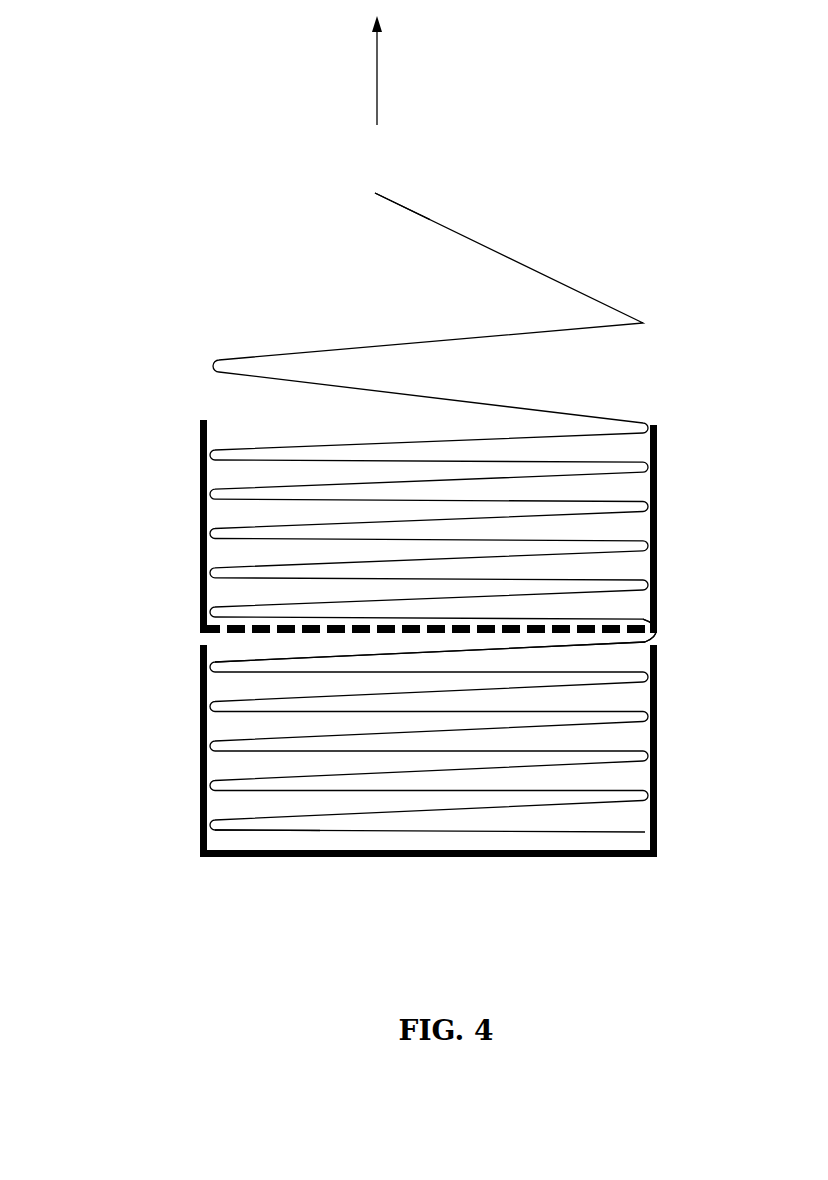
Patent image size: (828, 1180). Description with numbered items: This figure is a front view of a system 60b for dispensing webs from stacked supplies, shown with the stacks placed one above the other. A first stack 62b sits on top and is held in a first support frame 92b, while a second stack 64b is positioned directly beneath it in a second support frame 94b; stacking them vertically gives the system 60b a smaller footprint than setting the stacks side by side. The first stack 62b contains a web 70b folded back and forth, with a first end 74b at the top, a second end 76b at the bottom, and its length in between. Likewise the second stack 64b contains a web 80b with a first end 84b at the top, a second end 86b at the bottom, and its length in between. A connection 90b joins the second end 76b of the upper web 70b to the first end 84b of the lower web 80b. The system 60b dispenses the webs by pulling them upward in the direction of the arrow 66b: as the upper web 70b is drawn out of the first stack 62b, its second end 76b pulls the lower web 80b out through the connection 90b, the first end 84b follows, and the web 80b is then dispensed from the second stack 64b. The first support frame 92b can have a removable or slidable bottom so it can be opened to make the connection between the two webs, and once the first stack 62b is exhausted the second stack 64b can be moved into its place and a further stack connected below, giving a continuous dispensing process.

The system 60b is at (370, 460).
The first stack 62b is at (372, 511).
The second stack 64b is at (369, 766).
The arrow 66b is at (353, 70).
The web 70b is at (525, 268).
The first end 74b is at (385, 197).
The second end 76b is at (610, 617).
The web 80b is at (237, 833).
The first end 84b is at (603, 650).
The second end 86b is at (628, 835).
The connection 90b is at (647, 638).
The first support frame 92b is at (658, 458).
The second support frame 94b is at (657, 764).